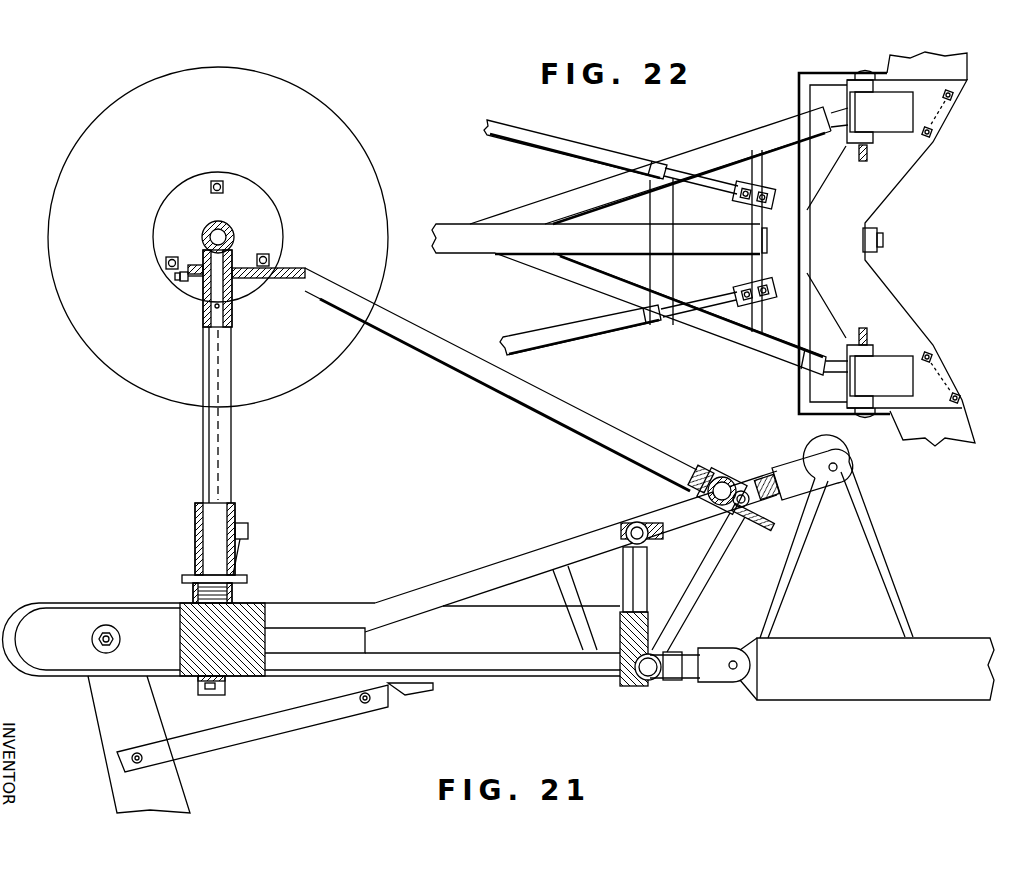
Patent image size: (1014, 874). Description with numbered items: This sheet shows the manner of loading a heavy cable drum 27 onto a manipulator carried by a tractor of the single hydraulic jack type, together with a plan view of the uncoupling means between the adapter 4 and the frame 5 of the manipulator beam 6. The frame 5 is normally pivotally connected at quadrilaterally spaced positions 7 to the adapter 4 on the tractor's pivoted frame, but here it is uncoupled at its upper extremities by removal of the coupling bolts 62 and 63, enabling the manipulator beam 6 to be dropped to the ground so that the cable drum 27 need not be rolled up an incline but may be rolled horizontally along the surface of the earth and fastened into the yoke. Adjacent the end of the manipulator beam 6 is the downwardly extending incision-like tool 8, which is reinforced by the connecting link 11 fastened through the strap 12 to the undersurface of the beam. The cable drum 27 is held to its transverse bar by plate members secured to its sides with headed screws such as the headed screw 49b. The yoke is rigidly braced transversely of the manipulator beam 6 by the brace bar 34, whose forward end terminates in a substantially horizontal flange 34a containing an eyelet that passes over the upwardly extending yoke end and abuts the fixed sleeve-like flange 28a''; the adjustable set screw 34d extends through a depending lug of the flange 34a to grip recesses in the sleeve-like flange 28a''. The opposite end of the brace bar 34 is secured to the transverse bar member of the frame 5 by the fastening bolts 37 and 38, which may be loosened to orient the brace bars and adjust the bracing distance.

In FIG. 21, the adapter 4 is at (890, 687).
In FIG. 22, the adapter 4 is at (880, 183).
In FIG. 22, the frame 5 is at (709, 195).
In FIG. 21, the manipulator beam 6 is at (436, 628).
In FIG. 22, the manipulator beam 6 is at (493, 233).
In FIG. 21, the pivotal connection 7 is at (733, 680).
In FIG. 21, the incision-like tool 8 is at (105, 715).
In FIG. 21, the connecting link 11 is at (277, 725).
In FIG. 21, the strap 12 is at (412, 700).
In FIG. 21, the heavy cable drum 27 is at (335, 148).
In FIG. 21, the sleeve-like flange 28a'' is at (185, 294).
In FIG. 21, the brace bar 34 is at (517, 392).
In FIG. 21, the flange 34a is at (200, 262).
In FIG. 21, the adjustable set screw 34d is at (185, 283).
In FIG. 21, the fastening bolt 37 is at (747, 478).
In FIG. 21, the fastening bolt 38 is at (765, 482).
In FIG. 21, the headed screw 49b is at (222, 182).
In FIG. 21, the coupling bolt 62 is at (833, 482).
In FIG. 22, the coupling bolt 62 is at (868, 333).
In FIG. 22, the coupling bolt 63 is at (862, 75).